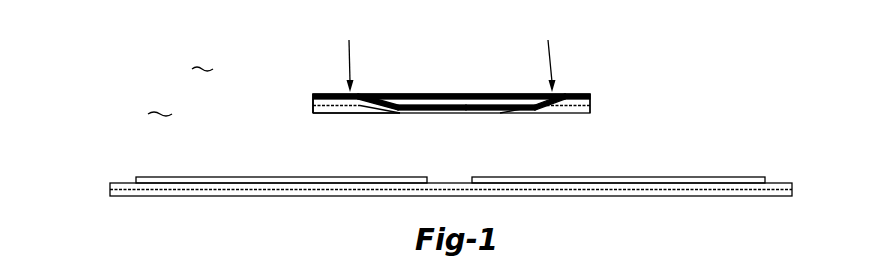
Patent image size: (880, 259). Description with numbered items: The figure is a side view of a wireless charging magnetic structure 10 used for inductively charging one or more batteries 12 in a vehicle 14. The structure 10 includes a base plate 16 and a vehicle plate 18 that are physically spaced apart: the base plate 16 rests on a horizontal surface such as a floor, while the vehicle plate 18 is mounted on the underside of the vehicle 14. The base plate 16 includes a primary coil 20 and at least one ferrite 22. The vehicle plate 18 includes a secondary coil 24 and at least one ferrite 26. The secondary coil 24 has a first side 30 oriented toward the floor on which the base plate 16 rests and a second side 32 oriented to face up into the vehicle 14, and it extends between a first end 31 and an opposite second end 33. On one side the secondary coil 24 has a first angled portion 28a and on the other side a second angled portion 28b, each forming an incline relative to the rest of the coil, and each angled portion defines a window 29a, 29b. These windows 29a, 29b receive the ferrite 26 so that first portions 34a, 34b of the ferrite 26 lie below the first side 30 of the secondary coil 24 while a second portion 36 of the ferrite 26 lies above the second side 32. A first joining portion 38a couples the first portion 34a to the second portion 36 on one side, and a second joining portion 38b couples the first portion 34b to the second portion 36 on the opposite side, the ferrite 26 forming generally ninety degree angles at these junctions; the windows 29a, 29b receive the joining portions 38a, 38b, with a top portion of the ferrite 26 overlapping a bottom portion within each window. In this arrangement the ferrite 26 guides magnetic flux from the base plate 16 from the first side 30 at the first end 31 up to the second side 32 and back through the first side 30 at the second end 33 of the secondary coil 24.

The wireless charging magnetic structure 10 is at (616, 55).
The batteries 12 is at (202, 59).
The vehicle 14 is at (160, 104).
The base plate 16 is at (779, 153).
The vehicle plate 18 is at (600, 102).
The primary coil 20 is at (723, 177).
The ferrite 22 is at (792, 189).
The secondary coil 24 is at (315, 105).
The ferrite 26 is at (360, 113).
The first angled portion 28a is at (383, 100).
The second angled portion 28b is at (520, 105).
The window 29a is at (387, 105).
The window 29b is at (517, 102).
The first side 30 is at (352, 113).
The first end 31 is at (349, 54).
The second side 32 is at (335, 94).
The second end 33 is at (551, 54).
The first portion 34a is at (328, 115).
The first portion 34b is at (574, 115).
The second portion 36 is at (452, 94).
The first joining portion 38a is at (372, 113).
The second joining portion 38b is at (530, 113).